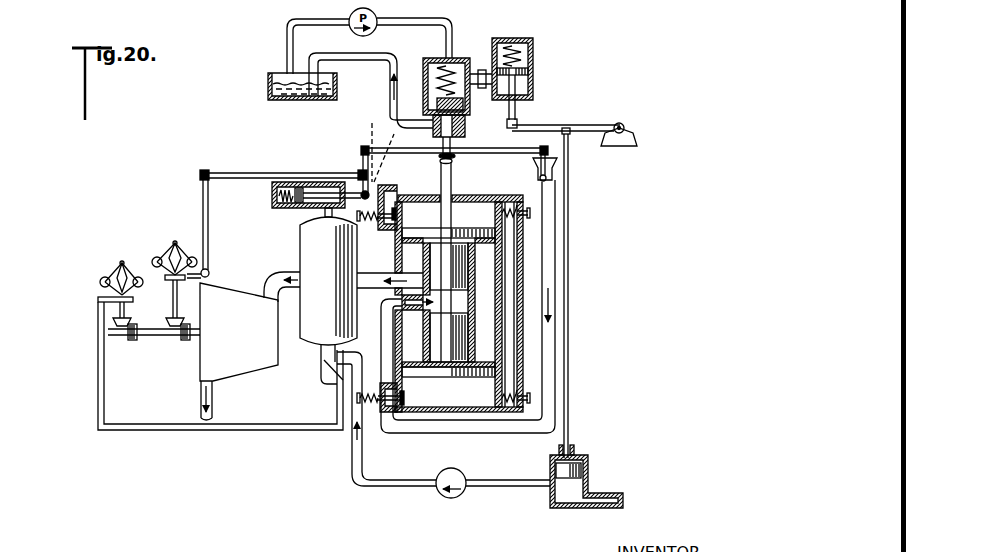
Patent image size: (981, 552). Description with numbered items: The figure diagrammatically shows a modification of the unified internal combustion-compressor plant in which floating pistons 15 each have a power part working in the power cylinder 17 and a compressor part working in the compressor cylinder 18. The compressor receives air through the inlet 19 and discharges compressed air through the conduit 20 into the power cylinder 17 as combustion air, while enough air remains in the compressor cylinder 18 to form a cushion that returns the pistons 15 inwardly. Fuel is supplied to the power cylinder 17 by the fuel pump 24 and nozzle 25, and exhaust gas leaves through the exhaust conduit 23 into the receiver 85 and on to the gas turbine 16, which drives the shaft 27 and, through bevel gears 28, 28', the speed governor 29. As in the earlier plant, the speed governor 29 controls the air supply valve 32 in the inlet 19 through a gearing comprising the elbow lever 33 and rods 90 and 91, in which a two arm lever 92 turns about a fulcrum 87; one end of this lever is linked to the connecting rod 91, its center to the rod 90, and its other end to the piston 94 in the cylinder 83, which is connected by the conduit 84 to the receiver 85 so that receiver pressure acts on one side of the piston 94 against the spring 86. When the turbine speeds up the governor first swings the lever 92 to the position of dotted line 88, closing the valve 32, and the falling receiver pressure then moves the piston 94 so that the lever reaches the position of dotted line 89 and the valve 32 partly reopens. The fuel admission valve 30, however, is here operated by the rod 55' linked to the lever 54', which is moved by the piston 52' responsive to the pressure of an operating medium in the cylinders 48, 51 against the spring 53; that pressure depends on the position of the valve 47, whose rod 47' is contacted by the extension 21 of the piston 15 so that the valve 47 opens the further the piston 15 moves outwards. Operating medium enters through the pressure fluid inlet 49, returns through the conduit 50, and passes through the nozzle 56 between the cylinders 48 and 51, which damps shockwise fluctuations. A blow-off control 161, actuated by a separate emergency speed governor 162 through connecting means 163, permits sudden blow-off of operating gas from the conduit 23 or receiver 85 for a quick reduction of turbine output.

The floating piston 15 is at (446, 258).
The gas turbine 16 is at (239, 351).
The power cylinder 17 is at (430, 304).
The compressor cylinder 18 is at (420, 221).
The inlet 19 is at (549, 199).
The conduit 20 is at (512, 258).
The extension 21 is at (440, 168).
The exhaust conduit 23 is at (266, 289).
The fuel pump 24 is at (451, 498).
The nozzle 25 is at (412, 306).
The shaft 27 is at (150, 328).
The bevel gear 28 is at (125, 354).
The bevel gears 28' is at (175, 354).
The speed governor 29 is at (172, 251).
The fuel admission valve 30 is at (590, 470).
The valve 32 is at (557, 178).
The elbow lever 33 is at (203, 203).
The valve 47 is at (469, 112).
The rod 47' is at (468, 137).
The cylinder 48 is at (423, 66).
The pressure fluid inlet 49 is at (453, 34).
The conduit 50 is at (390, 88).
The cylinder 51 is at (531, 93).
The piston 52' is at (536, 71).
The spring 53 is at (533, 46).
The lever 54' is at (574, 117).
The rod 55' is at (587, 293).
The nozzle 56 is at (484, 70).
The cylinder 83 is at (322, 188).
The conduit 84 is at (322, 213).
The receiver 85 is at (318, 257).
The spring 86 is at (272, 195).
The fulcrum 87 is at (370, 193).
The dotted line 88 is at (374, 131).
The dotted line 89 is at (370, 135).
The rod 90 is at (250, 172).
The connecting rod 91 is at (493, 154).
The two arm lever 92 is at (362, 158).
The piston 94 is at (290, 206).
The blow-off control 161 is at (330, 356).
The emergency speed governor 162 is at (118, 267).
The connecting means 163 is at (236, 431).